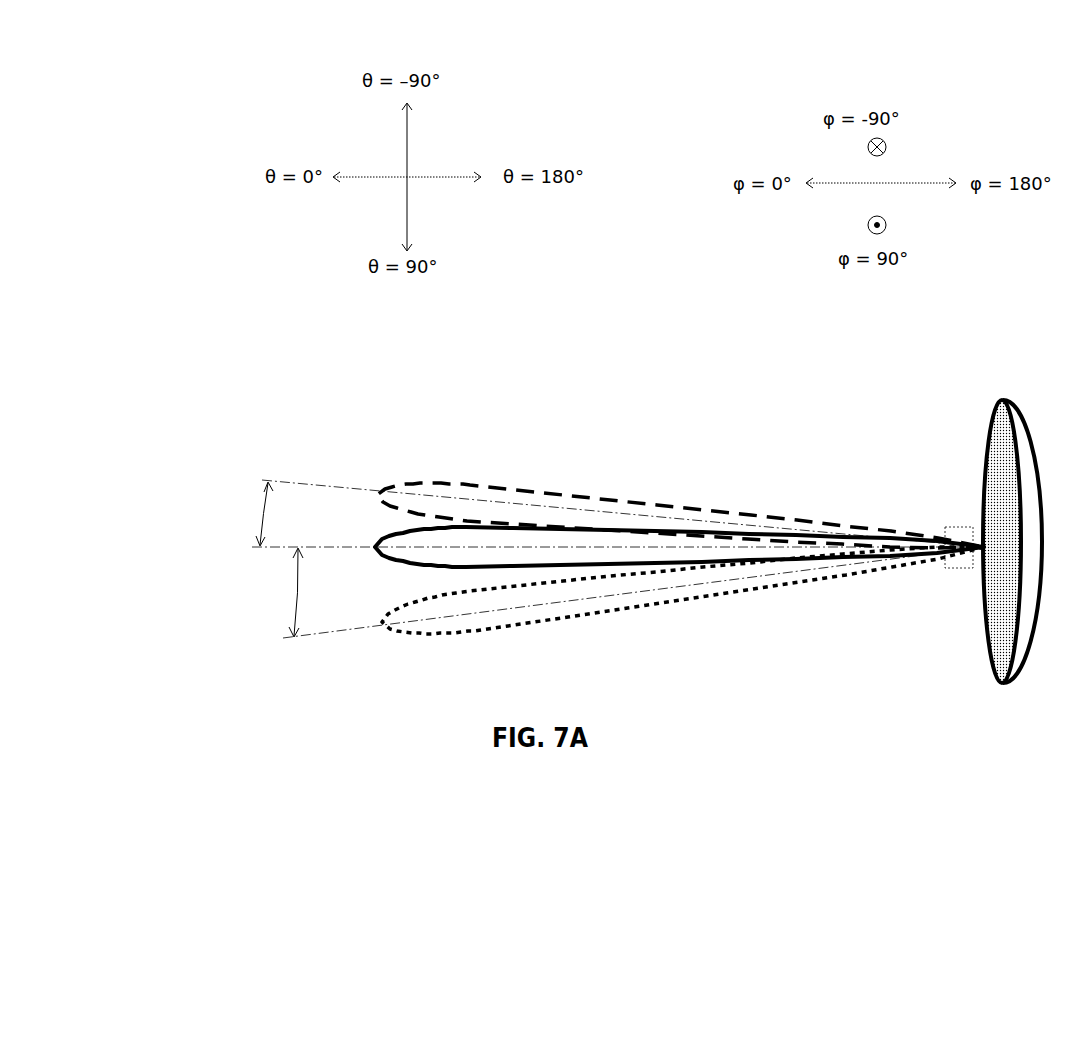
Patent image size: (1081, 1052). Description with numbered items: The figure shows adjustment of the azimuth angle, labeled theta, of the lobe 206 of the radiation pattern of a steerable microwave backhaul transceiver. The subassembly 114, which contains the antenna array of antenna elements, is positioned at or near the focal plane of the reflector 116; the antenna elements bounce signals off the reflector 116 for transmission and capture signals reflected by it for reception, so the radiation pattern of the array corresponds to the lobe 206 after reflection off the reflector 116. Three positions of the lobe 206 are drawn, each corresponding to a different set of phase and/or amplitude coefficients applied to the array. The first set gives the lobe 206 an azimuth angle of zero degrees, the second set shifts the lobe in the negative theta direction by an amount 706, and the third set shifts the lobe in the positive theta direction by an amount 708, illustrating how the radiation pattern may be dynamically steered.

The lobe of the radiation pattern 206 is at (382, 543).
The amount of shift in the −θ direction 706 is at (265, 503).
The amount of shift in the +θ direction 708 is at (294, 594).
The subassembly 114 is at (946, 528).
The reflector 116 is at (1016, 390).